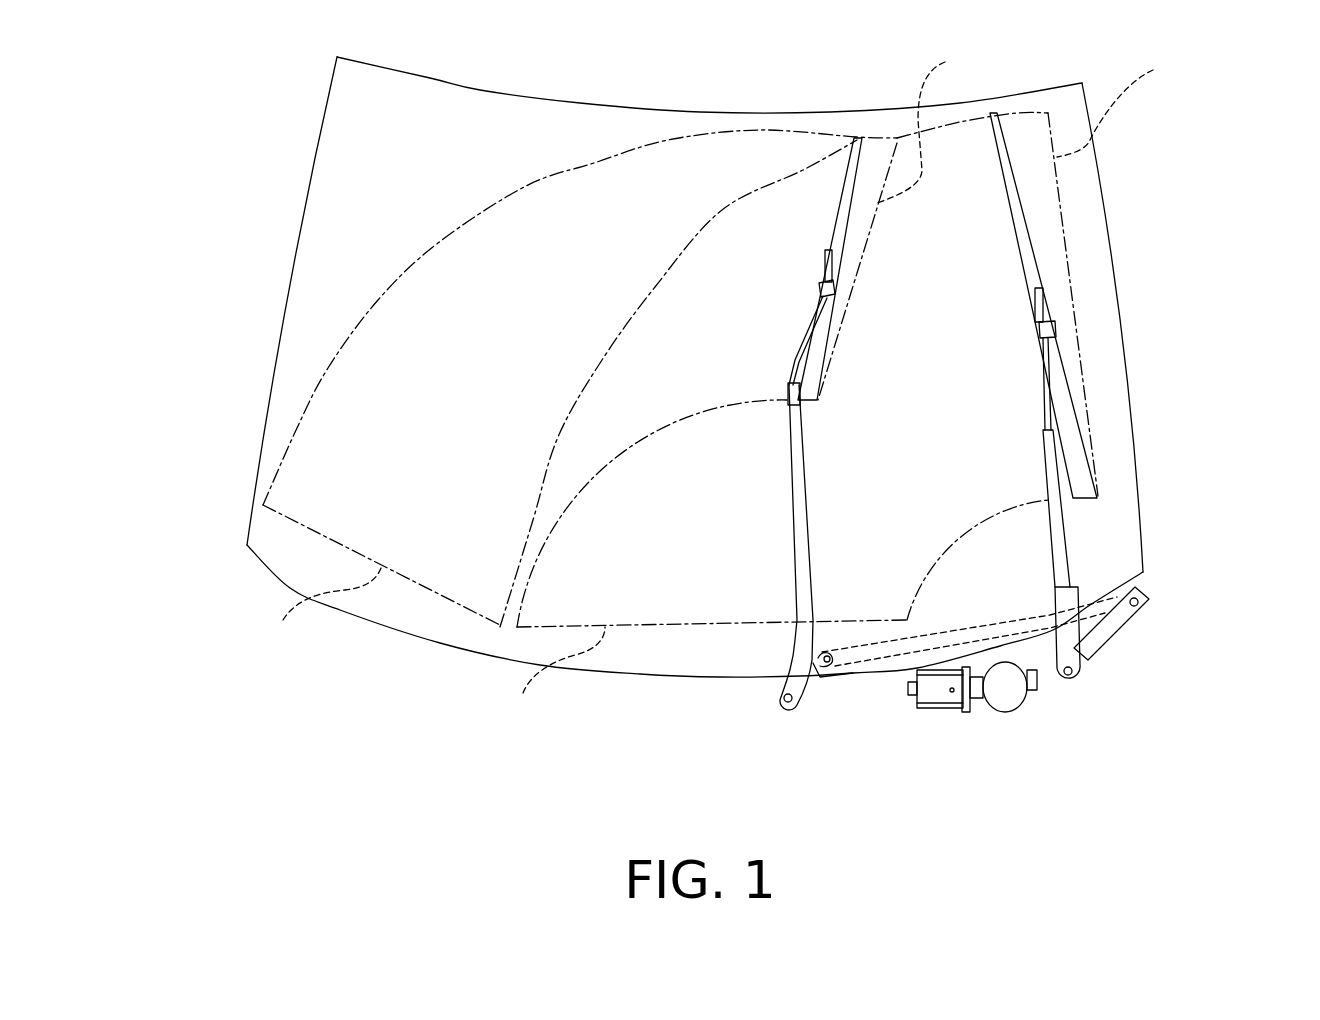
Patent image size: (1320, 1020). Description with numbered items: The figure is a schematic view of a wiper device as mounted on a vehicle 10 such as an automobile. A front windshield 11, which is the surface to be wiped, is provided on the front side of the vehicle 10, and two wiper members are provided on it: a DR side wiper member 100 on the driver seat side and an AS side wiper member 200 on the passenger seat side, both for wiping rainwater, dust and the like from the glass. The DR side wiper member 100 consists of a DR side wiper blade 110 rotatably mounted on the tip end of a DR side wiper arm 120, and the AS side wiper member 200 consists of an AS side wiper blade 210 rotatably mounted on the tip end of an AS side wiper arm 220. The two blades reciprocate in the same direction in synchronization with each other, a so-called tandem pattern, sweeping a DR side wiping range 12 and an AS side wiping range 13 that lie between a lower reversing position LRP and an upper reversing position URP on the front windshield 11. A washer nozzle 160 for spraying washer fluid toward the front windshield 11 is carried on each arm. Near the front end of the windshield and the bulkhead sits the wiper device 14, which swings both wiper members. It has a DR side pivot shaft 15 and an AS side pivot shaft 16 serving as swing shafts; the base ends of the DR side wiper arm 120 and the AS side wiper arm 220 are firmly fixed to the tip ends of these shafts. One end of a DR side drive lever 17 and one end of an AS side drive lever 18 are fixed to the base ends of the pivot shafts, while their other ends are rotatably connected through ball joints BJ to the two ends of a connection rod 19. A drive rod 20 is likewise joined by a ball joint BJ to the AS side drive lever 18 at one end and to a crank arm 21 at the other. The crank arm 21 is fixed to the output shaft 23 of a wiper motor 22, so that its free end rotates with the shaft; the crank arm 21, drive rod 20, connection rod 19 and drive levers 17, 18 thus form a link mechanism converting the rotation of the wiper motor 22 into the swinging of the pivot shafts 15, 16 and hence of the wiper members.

The vehicle 10 is at (252, 210).
The front windshield 11 is at (408, 185).
The DR side wiping range 12 is at (949, 339).
The AS side wiping range 13 is at (482, 396).
The wiper device 14 is at (982, 669).
The DR side pivot shaft 15 is at (1073, 678).
The AS side pivot shaft 16 is at (790, 705).
The DR side drive lever 17 is at (1103, 637).
The AS side drive lever 18 is at (813, 675).
The connection rod 19 is at (963, 630).
The drive rod 20 is at (900, 675).
The crank arm 21 is at (983, 707).
The wiper motor 22 is at (1028, 700).
The output shaft 23 is at (1017, 703).
The DR side wiper member 100 is at (1123, 395).
The DR side wiper blade 110 is at (1020, 210).
The DR side wiper arm 120 is at (1057, 547).
The washer nozzle 160 is at (822, 288).
The AS side wiper member 200 is at (789, 397).
The AS side wiper blade 210 is at (840, 213).
The AS side wiper arm 220 is at (800, 566).
The upper reversing position URP is at (1158, 68).
The lower reversing position LRP is at (433, 647).
The ball joint BJ is at (1137, 598).